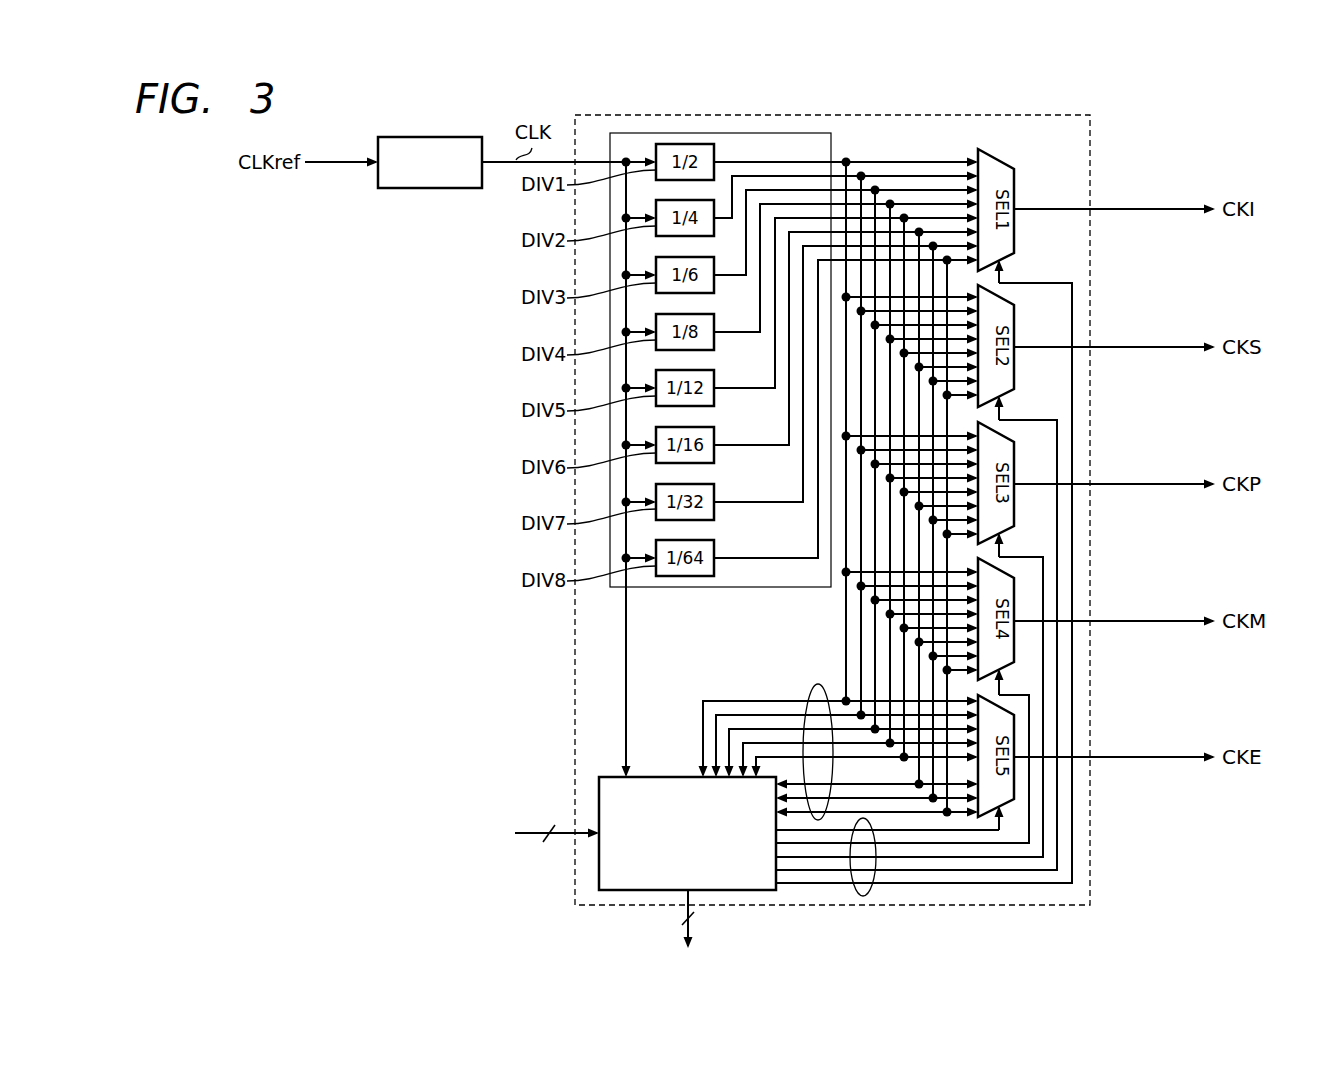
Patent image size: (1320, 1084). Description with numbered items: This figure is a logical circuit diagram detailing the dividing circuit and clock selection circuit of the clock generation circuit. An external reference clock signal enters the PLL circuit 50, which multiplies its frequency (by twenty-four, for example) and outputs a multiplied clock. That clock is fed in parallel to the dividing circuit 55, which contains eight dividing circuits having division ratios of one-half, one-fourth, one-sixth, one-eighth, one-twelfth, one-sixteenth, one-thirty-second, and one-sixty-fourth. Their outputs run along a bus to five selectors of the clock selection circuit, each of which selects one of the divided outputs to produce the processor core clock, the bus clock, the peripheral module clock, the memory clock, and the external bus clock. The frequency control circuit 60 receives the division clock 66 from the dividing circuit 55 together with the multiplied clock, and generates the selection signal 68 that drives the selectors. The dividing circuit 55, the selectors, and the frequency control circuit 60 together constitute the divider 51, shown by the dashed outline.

The PLL circuit 50 is at (441, 131).
The divider 51 is at (1091, 140).
The dividing circuit 55 is at (833, 150).
The frequency control circuit 60 is at (680, 776).
The division clock 66 is at (809, 690).
The selection signal 68 is at (872, 889).